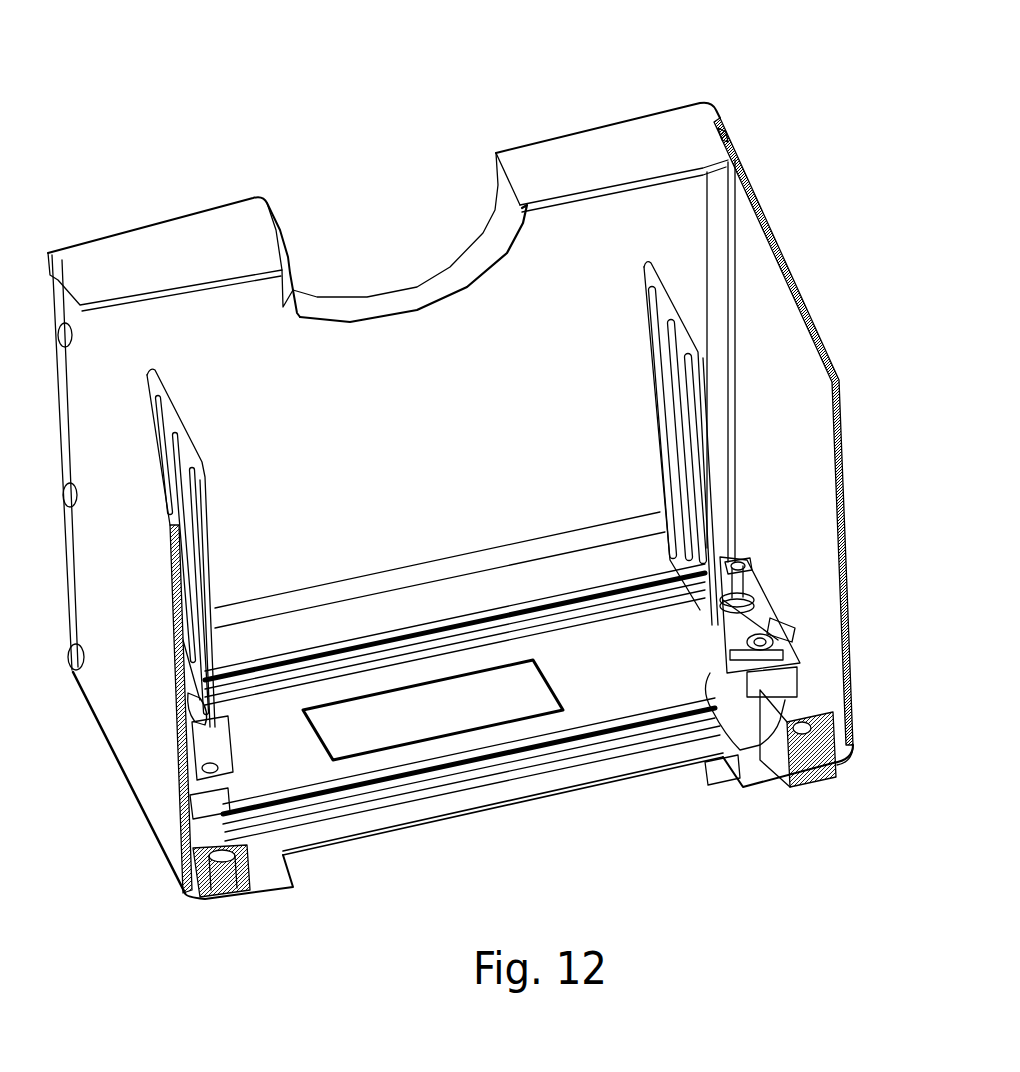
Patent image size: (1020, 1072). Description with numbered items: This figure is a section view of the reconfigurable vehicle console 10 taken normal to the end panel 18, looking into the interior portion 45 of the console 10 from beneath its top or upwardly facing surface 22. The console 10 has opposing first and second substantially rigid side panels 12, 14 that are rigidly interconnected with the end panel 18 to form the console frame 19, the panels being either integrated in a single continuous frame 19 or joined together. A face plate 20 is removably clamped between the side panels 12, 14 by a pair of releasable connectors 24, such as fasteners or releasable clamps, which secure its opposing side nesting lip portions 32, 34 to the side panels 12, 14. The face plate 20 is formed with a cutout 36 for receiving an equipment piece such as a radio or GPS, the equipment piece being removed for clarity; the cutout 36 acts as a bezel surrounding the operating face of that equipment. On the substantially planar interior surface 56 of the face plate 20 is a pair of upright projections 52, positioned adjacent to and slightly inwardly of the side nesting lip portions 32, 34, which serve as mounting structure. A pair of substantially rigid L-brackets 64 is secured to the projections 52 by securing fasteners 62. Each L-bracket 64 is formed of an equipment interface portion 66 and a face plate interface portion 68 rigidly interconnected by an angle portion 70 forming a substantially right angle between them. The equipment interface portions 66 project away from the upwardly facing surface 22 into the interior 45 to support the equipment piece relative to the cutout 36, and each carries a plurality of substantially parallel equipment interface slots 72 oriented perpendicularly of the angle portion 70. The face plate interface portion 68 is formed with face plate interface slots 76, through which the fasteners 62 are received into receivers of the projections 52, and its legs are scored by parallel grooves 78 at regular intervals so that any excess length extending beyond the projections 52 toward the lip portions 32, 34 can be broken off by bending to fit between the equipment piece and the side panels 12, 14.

The reconfigurable vehicle console 10 is at (231, 105).
The first side panel 12 is at (118, 770).
The second side panel 14 is at (848, 720).
The second end panel 18 is at (541, 131).
The console frame 19 is at (215, 208).
The face plate 20 is at (282, 893).
The upwardly facing surface 22 is at (259, 915).
The releasable connectors 24 is at (746, 618).
The side nesting lip portion 32 is at (822, 765).
The side nesting lip portion 34 is at (202, 905).
The cutout 36 is at (330, 852).
The interior portion 45 is at (802, 410).
The upright projections 52 is at (786, 658).
The interior surface 56 is at (603, 712).
The fasteners 62 is at (200, 760).
The L-brackets 64 is at (195, 683).
The equipment interface portion 66 is at (145, 425).
The face plate interface portion 68 is at (213, 777).
The angle portion 70 is at (223, 782).
The equipment interface slots 72 is at (160, 415).
The face plate interface slots 76 is at (208, 763).
The scoring grooves 78 is at (757, 688).